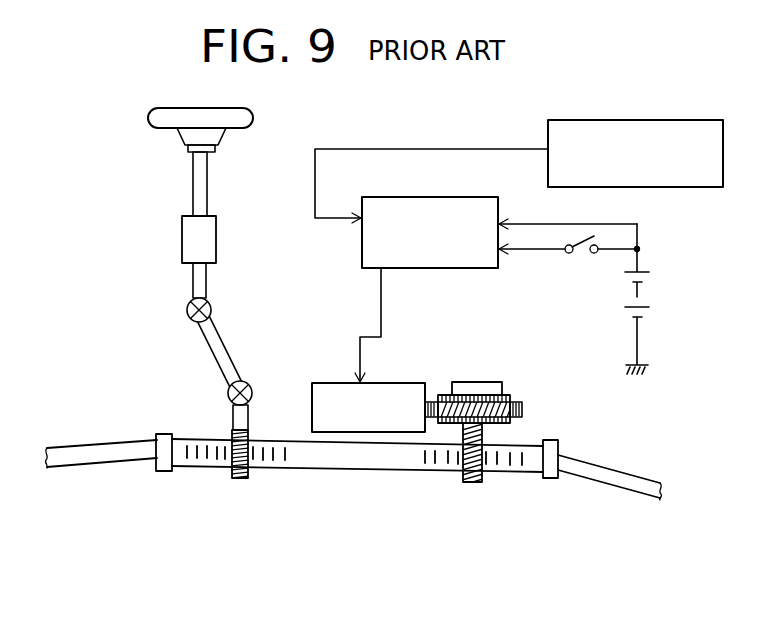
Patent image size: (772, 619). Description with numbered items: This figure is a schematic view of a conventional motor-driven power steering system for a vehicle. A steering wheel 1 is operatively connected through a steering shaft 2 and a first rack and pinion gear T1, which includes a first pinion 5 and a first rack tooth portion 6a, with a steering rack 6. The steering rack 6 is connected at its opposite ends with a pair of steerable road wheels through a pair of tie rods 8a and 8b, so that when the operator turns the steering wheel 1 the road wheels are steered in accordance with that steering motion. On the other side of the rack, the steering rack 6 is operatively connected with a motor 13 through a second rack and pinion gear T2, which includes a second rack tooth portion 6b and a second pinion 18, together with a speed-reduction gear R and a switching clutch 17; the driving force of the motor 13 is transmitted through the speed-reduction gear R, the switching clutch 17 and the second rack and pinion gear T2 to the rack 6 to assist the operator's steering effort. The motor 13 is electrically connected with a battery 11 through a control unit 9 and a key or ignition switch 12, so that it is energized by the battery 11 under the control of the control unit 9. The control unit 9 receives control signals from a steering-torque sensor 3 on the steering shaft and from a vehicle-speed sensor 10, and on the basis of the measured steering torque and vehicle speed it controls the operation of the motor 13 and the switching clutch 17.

The steering wheel 1 is at (150, 120).
The steering shaft 2 is at (193, 190).
The steering-torque sensor 3 is at (190, 230).
The first pinion 5 is at (243, 487).
The steering rack 6 is at (337, 460).
The first rack tooth portion 6a is at (270, 462).
The second rack tooth portion 6b is at (443, 462).
The tie rod 8a is at (97, 460).
The tie rod 8b is at (613, 486).
The control unit 9 is at (457, 197).
The vehicle-speed sensor 10 is at (697, 190).
The battery 11 is at (638, 285).
The key or ignition switch 12 is at (582, 253).
The motor 13 is at (332, 385).
The switching clutch 17 is at (490, 382).
The second pinion 18 is at (478, 487).
The speed-reduction gear R is at (524, 402).
The first rack and pinion gear T1 is at (227, 479).
The second rack and pinion gear T2 is at (472, 492).